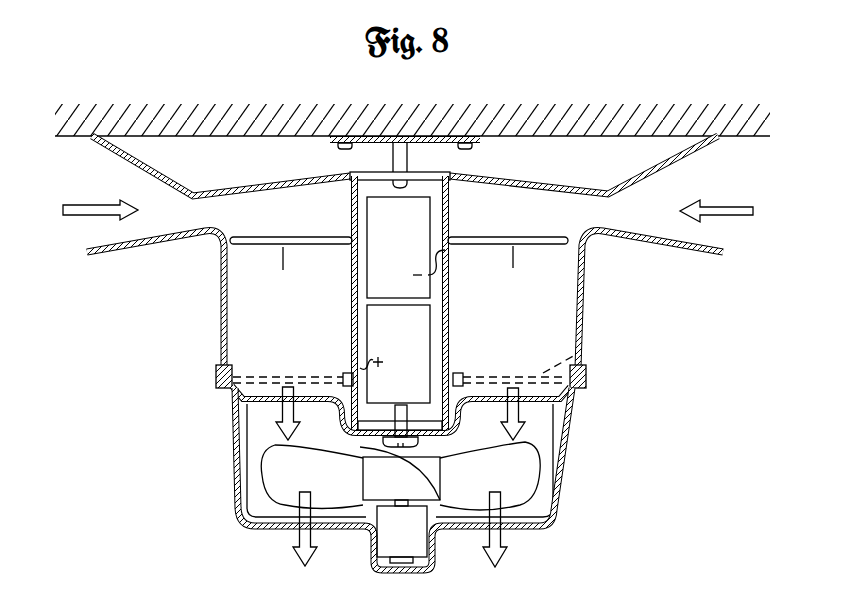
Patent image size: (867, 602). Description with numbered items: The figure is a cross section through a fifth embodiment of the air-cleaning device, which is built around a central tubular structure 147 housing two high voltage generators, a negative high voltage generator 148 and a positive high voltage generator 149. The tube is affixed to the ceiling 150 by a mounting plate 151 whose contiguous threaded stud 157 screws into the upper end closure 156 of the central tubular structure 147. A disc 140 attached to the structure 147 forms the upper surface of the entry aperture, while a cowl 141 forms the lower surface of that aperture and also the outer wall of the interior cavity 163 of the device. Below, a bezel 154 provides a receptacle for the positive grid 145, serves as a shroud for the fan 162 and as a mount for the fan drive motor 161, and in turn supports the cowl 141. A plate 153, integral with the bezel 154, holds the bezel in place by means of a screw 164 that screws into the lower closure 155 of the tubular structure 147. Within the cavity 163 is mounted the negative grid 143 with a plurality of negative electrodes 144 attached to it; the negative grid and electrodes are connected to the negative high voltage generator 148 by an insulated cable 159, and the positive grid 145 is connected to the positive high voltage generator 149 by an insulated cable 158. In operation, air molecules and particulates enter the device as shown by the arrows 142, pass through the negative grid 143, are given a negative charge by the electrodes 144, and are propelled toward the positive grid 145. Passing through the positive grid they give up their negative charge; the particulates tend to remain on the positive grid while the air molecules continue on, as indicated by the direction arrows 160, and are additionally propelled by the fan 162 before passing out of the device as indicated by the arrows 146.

The disc 140 is at (120, 160).
The cowl 141 is at (672, 247).
The arrows 142 is at (735, 200).
The negative grid 143 is at (530, 235).
The negative electrodes 144 is at (285, 248).
The positive grid 145 is at (582, 351).
The arrows 146 is at (500, 537).
The central tubular structure 147 is at (452, 193).
The negative high voltage generator 148 is at (417, 252).
The positive high voltage generator 149 is at (417, 350).
The ceiling 150 is at (608, 121).
The mounting plate 151 is at (330, 137).
The plate 153 is at (262, 400).
The bezel 154 is at (567, 455).
The lower closure 155 is at (425, 416).
The upper end closure 156 is at (372, 185).
The threaded stud 157 is at (402, 147).
The insulated cable 158 is at (348, 365).
The insulated cable 159 is at (450, 268).
The direction arrows 160 is at (520, 408).
The fan drive motor 161 is at (417, 542).
The fan 162 is at (510, 483).
The interior cavity 163 is at (308, 325).
The screw 164 is at (393, 442).